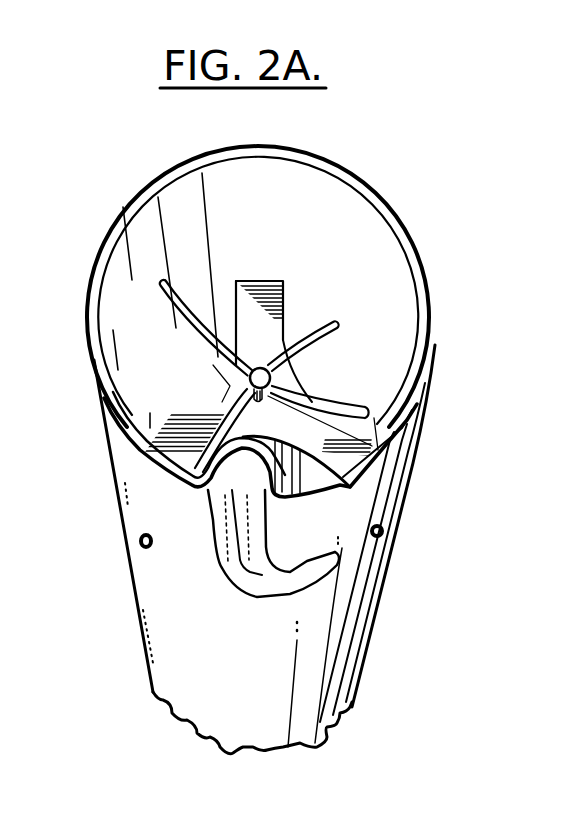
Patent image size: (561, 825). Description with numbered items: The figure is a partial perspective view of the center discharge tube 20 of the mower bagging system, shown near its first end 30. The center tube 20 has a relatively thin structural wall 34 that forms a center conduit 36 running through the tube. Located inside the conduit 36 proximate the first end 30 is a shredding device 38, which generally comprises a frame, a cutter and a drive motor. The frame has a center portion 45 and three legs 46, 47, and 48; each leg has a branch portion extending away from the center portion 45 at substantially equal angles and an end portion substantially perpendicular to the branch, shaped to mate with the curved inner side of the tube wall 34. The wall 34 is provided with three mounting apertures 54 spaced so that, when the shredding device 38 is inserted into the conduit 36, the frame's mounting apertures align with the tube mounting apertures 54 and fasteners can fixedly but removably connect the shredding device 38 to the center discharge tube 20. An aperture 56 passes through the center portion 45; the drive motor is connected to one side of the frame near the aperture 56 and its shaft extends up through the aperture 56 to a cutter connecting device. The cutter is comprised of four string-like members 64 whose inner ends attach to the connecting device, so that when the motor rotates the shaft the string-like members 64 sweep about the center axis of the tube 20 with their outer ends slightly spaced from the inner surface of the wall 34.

The center discharge tube 20 is at (436, 347).
The first end 30 is at (408, 230).
The structural wall 34 is at (414, 447).
The center conduit 36 is at (140, 207).
The shredding device 38 is at (284, 294).
The center portion 45 is at (227, 387).
The leg 46 is at (346, 476).
The leg 47 is at (172, 462).
The leg 48 is at (246, 286).
The tube mounting apertures 54 is at (139, 548).
The aperture 56 is at (270, 400).
The string-like members 64 is at (343, 403).